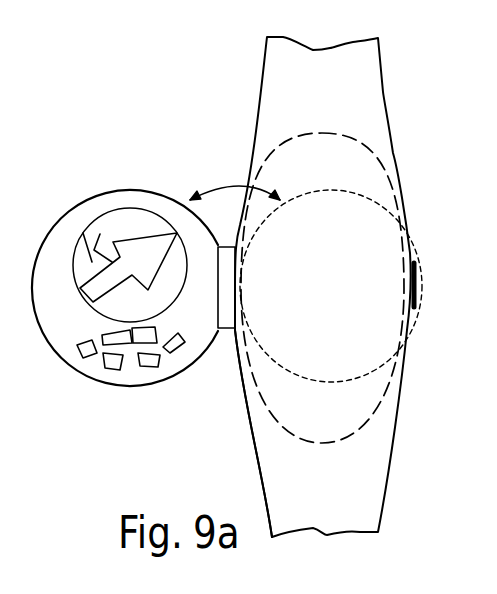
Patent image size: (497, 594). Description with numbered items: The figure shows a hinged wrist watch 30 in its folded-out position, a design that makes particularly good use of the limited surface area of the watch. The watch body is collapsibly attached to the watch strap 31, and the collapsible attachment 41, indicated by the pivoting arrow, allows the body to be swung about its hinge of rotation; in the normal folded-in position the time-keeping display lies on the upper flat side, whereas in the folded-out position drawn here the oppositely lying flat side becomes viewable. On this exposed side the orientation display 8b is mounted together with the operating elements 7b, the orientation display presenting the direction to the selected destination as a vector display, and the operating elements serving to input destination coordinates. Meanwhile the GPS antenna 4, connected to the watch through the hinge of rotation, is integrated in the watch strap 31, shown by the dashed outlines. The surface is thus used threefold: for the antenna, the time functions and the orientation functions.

The antenna 4 is at (310, 135).
The operating elements 7b is at (113, 345).
The orientation display 8b is at (122, 217).
The wrist watch 30 is at (387, 93).
The watch strap 31 is at (280, 447).
The collapsible attachment 41 is at (223, 185).